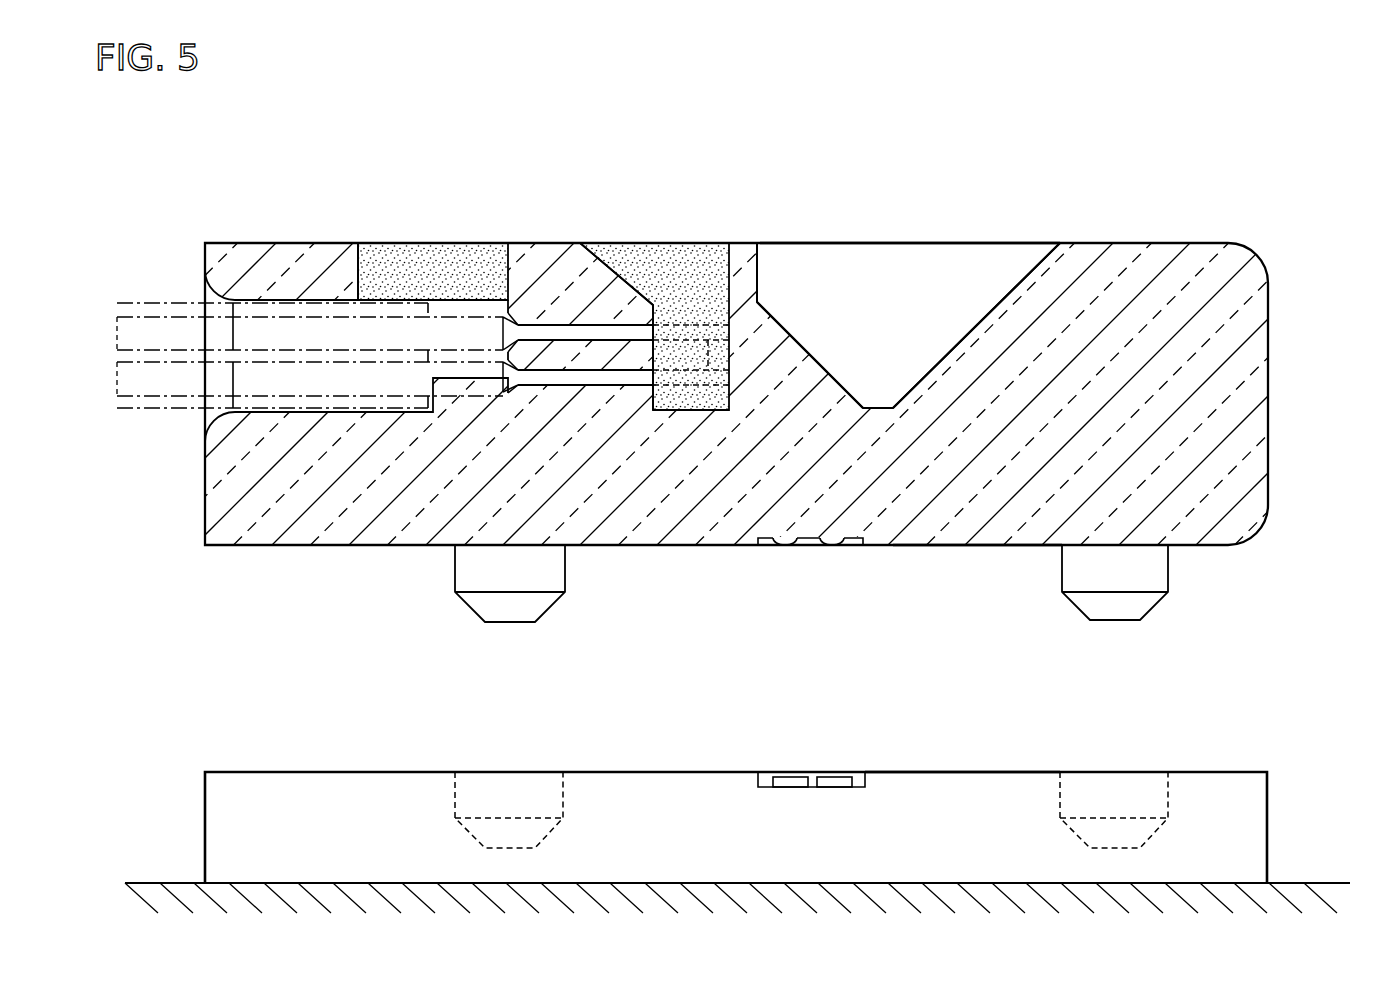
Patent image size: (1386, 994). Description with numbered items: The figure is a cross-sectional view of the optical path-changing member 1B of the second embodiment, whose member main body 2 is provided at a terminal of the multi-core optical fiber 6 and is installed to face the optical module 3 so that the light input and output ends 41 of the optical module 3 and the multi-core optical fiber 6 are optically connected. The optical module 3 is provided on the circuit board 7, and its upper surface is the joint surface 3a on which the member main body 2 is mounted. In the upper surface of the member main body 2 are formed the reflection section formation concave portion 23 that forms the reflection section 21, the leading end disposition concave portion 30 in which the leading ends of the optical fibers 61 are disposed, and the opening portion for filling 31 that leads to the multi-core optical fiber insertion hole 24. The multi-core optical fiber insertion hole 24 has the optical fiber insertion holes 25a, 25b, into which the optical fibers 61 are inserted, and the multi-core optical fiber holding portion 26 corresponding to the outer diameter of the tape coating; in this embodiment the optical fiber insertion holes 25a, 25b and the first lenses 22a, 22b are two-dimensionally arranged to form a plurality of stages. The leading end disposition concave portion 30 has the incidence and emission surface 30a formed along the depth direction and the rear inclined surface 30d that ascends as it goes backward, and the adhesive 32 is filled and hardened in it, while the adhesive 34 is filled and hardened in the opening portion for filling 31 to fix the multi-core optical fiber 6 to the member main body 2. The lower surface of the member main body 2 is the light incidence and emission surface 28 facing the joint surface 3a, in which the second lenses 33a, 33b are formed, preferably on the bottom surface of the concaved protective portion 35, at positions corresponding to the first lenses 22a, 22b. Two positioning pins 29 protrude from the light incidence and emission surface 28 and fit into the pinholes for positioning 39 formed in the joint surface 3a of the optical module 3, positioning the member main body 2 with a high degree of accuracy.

The optical path-changing member 1B is at (1213, 217).
The member main body 2 is at (1101, 240).
The optical module 3 is at (1272, 769).
The joint surface 3a is at (905, 772).
The multi-core optical fiber 6 is at (150, 303).
The circuit board 7 is at (1304, 892).
The reflection section 21 is at (762, 302).
The first lens 22a is at (784, 328).
The first lens 22b is at (840, 383).
The reflection section formation concave portion 23 is at (892, 243).
The multi-core optical fiber insertion hole 24 is at (216, 355).
The optical fiber insertion hole 25a is at (566, 322).
The optical fiber insertion hole 25b is at (613, 378).
The multi-core optical fiber holding portion 26 is at (312, 303).
The light incidence and emission surface 28 is at (940, 548).
The positioning pin 29 is at (510, 623).
The leading end disposition concave portion 30 is at (681, 268).
The incidence and emission surface 30a is at (731, 408).
The rear inclined surface 30d is at (612, 255).
The opening portion for filling 31 is at (384, 243).
The adhesive 32 is at (655, 272).
The second lens 33a is at (787, 548).
The second lens 33b is at (836, 548).
The adhesive 34 is at (437, 250).
The concaved protective portion 35 is at (762, 548).
The pinhole for positioning 39 is at (560, 798).
The light input and output end 41 is at (790, 782).
The optical fiber 61 is at (708, 370).